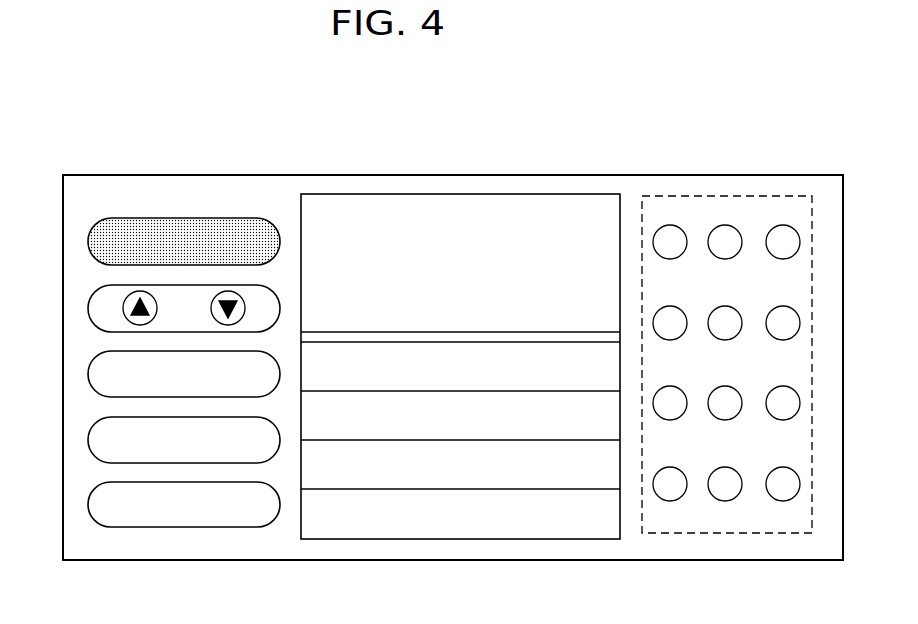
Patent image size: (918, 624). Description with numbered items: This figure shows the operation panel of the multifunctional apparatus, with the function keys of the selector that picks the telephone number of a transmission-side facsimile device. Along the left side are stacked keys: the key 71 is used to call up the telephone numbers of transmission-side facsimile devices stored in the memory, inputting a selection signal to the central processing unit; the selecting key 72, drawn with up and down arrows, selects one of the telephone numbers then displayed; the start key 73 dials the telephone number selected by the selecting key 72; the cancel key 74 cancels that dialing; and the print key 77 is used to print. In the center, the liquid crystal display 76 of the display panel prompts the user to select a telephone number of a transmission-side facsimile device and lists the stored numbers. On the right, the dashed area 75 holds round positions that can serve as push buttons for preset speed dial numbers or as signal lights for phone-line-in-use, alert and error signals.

The key 71 is at (88, 239).
The selecting key 72 is at (88, 305).
The start key 73 is at (88, 371).
The cancel key 74 is at (88, 436).
The area 75 is at (724, 196).
The liquid crystal display 76 is at (460, 194).
The print key 77 is at (88, 501).